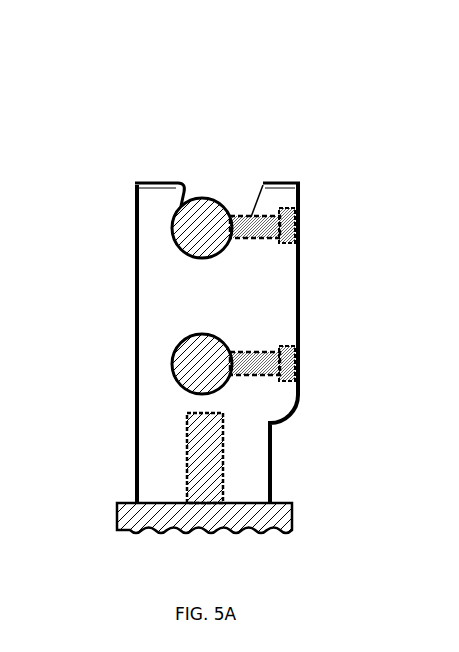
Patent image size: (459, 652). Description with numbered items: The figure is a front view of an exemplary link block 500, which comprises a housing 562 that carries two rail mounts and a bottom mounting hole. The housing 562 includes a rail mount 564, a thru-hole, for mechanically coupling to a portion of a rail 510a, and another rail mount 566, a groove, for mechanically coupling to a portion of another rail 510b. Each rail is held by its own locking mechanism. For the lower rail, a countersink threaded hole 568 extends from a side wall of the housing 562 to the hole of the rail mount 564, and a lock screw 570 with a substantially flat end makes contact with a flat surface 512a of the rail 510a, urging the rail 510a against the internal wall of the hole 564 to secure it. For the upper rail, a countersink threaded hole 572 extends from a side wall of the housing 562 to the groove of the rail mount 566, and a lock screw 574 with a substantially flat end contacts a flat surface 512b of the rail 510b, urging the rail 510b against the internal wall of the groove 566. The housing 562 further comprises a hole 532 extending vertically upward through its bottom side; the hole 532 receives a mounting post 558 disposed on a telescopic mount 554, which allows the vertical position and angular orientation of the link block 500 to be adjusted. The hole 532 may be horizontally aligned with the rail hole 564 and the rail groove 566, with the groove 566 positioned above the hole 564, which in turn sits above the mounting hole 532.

The link block 500 is at (216, 118).
The rail 510a is at (203, 372).
The rail 510b is at (202, 222).
The flat surface 512a is at (237, 352).
The flat surface 512b is at (233, 214).
The hole 532 is at (187, 464).
The telescopic mount 554 is at (243, 517).
The mounting post 558 is at (205, 448).
The housing 562 is at (284, 183).
The rail mount 564 is at (174, 347).
The rail mount 566 is at (177, 250).
The countersink threaded hole 568 is at (288, 346).
The lock screw 570 is at (300, 365).
The countersink threaded hole 572 is at (288, 208).
The lock screw 574 is at (300, 228).